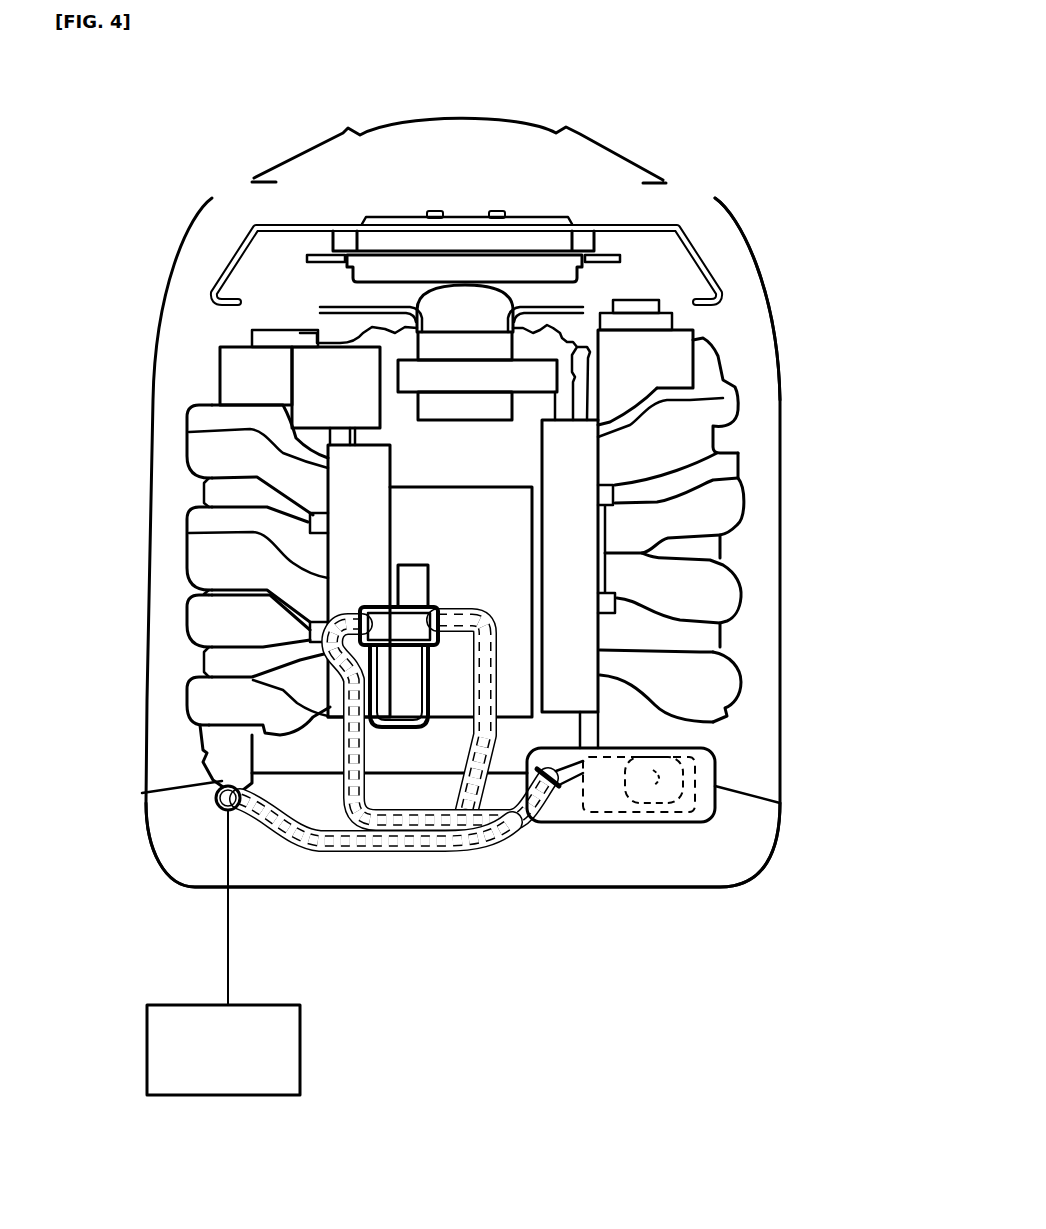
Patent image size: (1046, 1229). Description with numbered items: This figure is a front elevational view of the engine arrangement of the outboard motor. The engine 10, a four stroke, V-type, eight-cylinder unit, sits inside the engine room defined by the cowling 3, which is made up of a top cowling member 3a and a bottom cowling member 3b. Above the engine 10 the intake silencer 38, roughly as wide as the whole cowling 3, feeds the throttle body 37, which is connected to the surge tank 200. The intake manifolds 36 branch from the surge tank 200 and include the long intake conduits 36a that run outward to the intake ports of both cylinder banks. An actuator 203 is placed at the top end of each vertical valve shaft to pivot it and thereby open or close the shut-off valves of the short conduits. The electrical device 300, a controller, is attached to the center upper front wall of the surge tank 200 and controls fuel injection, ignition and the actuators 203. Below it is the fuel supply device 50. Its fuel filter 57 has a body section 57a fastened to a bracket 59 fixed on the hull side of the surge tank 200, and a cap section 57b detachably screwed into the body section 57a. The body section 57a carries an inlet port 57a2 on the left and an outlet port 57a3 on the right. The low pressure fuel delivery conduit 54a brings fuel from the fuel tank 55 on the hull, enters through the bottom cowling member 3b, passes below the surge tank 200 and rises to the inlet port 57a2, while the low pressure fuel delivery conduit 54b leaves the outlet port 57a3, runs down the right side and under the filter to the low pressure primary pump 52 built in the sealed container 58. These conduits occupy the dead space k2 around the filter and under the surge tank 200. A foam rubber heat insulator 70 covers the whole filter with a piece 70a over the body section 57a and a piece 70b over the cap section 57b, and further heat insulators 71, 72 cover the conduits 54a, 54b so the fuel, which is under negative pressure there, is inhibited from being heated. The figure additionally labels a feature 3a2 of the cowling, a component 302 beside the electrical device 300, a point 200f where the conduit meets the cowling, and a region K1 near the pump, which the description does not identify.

The cowling 3 is at (795, 381).
The top cowling member 3a is at (128, 776).
The hull inner wall 3a2 is at (753, 758).
The bottom cowling member 3b is at (773, 873).
The engine 10 is at (724, 339).
The intake silencer 38 is at (630, 224).
The actuator 203 is at (250, 362).
The upper plate 302 is at (352, 373).
The electrical device 300 is at (435, 382).
The throttle body 37 is at (480, 347).
The surge tank 200 is at (581, 326).
The intake manifolds 36 is at (221, 460).
The long intake conduits 36a is at (243, 442).
The outlet port 57a3 is at (343, 593).
The body section 57a is at (393, 623).
The inlet port 57a2 is at (488, 593).
The fuel filter 57 is at (407, 598).
The cap section 57b is at (417, 703).
The bracket 59 is at (432, 597).
The heat insulator 70 is at (396, 737).
The piece 70a is at (463, 613).
The piece 70b is at (432, 672).
The heat insulator 72 is at (490, 835).
The low pressure fuel delivery conduit 54a is at (318, 853).
The low pressure fuel delivery conduit 54b is at (445, 853).
The dead space k2 is at (362, 875).
The fuel supply device 50 is at (429, 870).
The hull pipe joint 200f is at (273, 801).
The heat insulator 71 is at (268, 838).
The fuel tank 55 is at (147, 1032).
The low pressure primary pump 52 is at (677, 792).
The sealed container 58 is at (572, 803).
The pump housing K1 is at (702, 839).